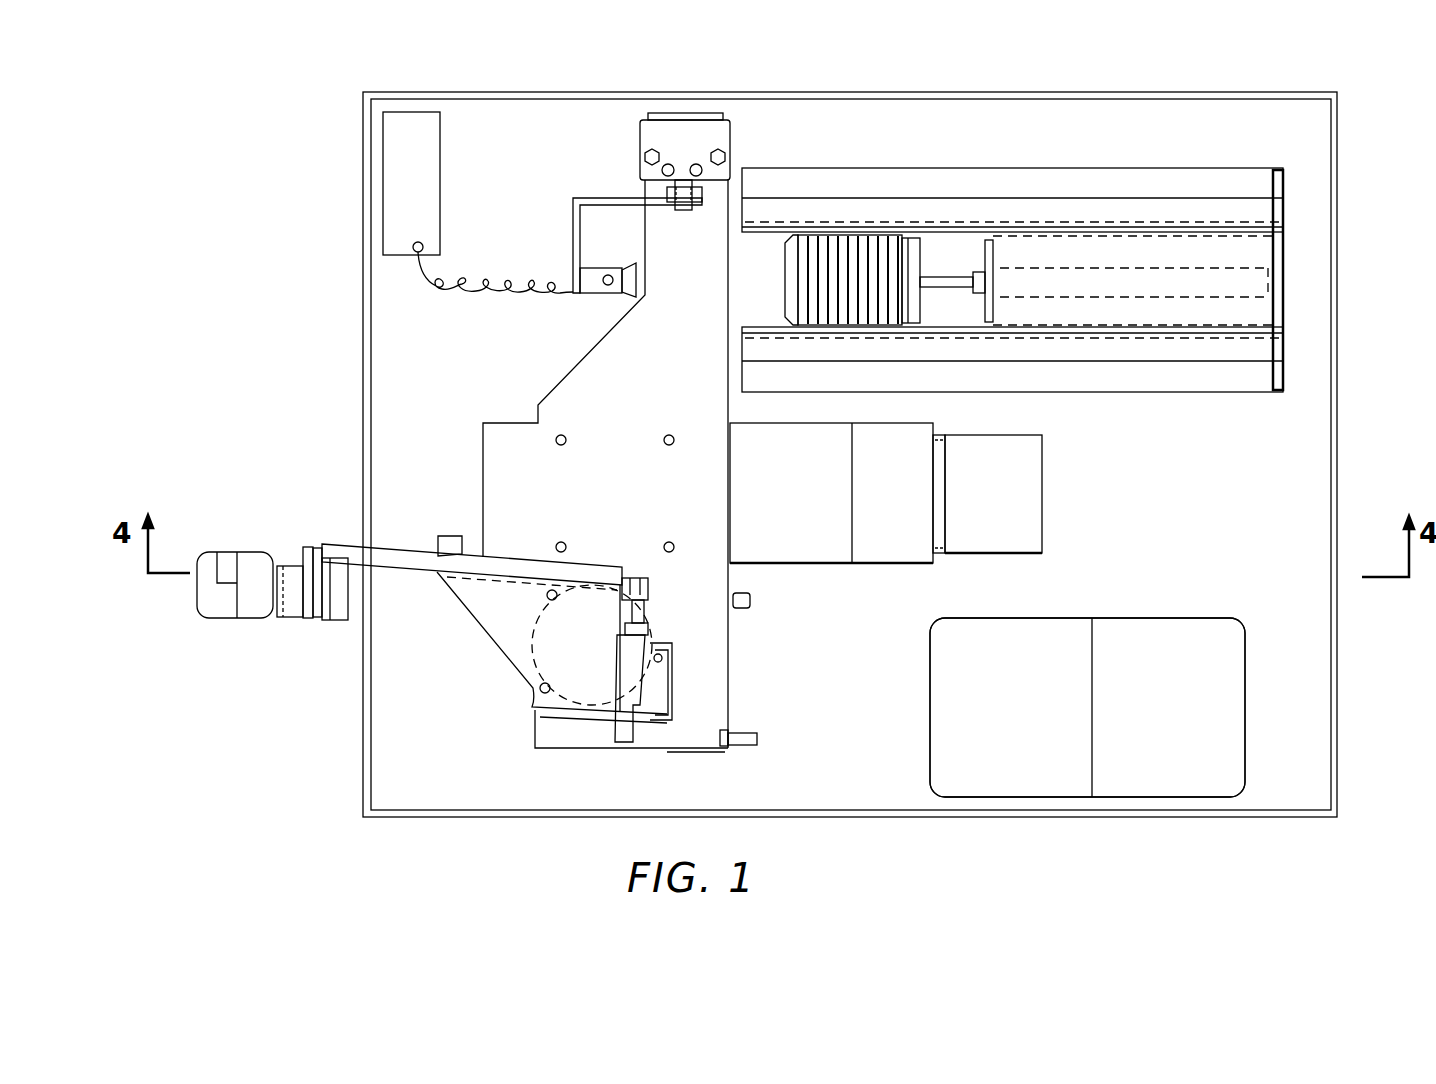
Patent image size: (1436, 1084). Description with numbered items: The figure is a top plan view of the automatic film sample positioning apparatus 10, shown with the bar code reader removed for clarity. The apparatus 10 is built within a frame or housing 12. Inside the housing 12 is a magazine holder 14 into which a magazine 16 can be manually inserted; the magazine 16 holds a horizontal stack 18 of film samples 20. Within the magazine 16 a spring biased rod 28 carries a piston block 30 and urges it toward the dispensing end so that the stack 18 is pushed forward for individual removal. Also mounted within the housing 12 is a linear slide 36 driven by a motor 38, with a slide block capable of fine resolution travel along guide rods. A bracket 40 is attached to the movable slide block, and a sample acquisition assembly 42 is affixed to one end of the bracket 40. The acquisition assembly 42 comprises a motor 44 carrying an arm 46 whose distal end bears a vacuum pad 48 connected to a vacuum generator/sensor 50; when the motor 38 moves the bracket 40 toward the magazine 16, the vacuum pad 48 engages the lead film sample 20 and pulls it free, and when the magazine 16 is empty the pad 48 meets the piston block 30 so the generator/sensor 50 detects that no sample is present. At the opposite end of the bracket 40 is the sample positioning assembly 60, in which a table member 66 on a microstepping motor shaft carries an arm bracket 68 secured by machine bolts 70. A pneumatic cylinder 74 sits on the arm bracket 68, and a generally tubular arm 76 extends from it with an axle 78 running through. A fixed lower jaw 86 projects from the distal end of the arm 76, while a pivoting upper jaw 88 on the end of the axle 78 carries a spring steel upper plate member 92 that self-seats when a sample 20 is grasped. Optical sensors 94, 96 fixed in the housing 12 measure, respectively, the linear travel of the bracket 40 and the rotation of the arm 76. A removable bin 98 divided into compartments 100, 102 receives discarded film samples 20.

The automatic film sample positioning apparatus 10 is at (443, 845).
The frame or housing 12 is at (1338, 483).
The magazine holder 14 is at (1237, 372).
The magazine 16 is at (1220, 315).
The horizontal stack 18 is at (855, 257).
The film sample 20 is at (267, 562).
The spring biased rod 28 is at (948, 275).
The piston block 30 is at (912, 307).
The linear slide 36 is at (808, 548).
The motor 38 is at (1025, 463).
The bracket 40 is at (707, 670).
The sample acquisition assembly 42 is at (575, 153).
The motor 44 is at (740, 135).
The arm 46 is at (573, 215).
The vacuum pad 48 is at (592, 287).
The vacuum generator/sensor 50 is at (390, 142).
The sample positioning assembly 60 is at (486, 708).
The table member 66 is at (530, 707).
The arm bracket 68 is at (482, 620).
The machine bolts 70 is at (547, 595).
The pneumatic cylinder 74 is at (632, 727).
The arm 76 is at (403, 568).
The axle 78 is at (625, 590).
The fixed lower jaw 86 is at (332, 620).
The pivoting upper jaw 88 is at (302, 620).
The upper plate member 92 is at (295, 567).
The sensor 94 is at (752, 605).
The sensor 96 is at (762, 740).
The bin 98 is at (1147, 618).
The compartment 100 is at (987, 778).
The compartment 102 is at (1197, 778).